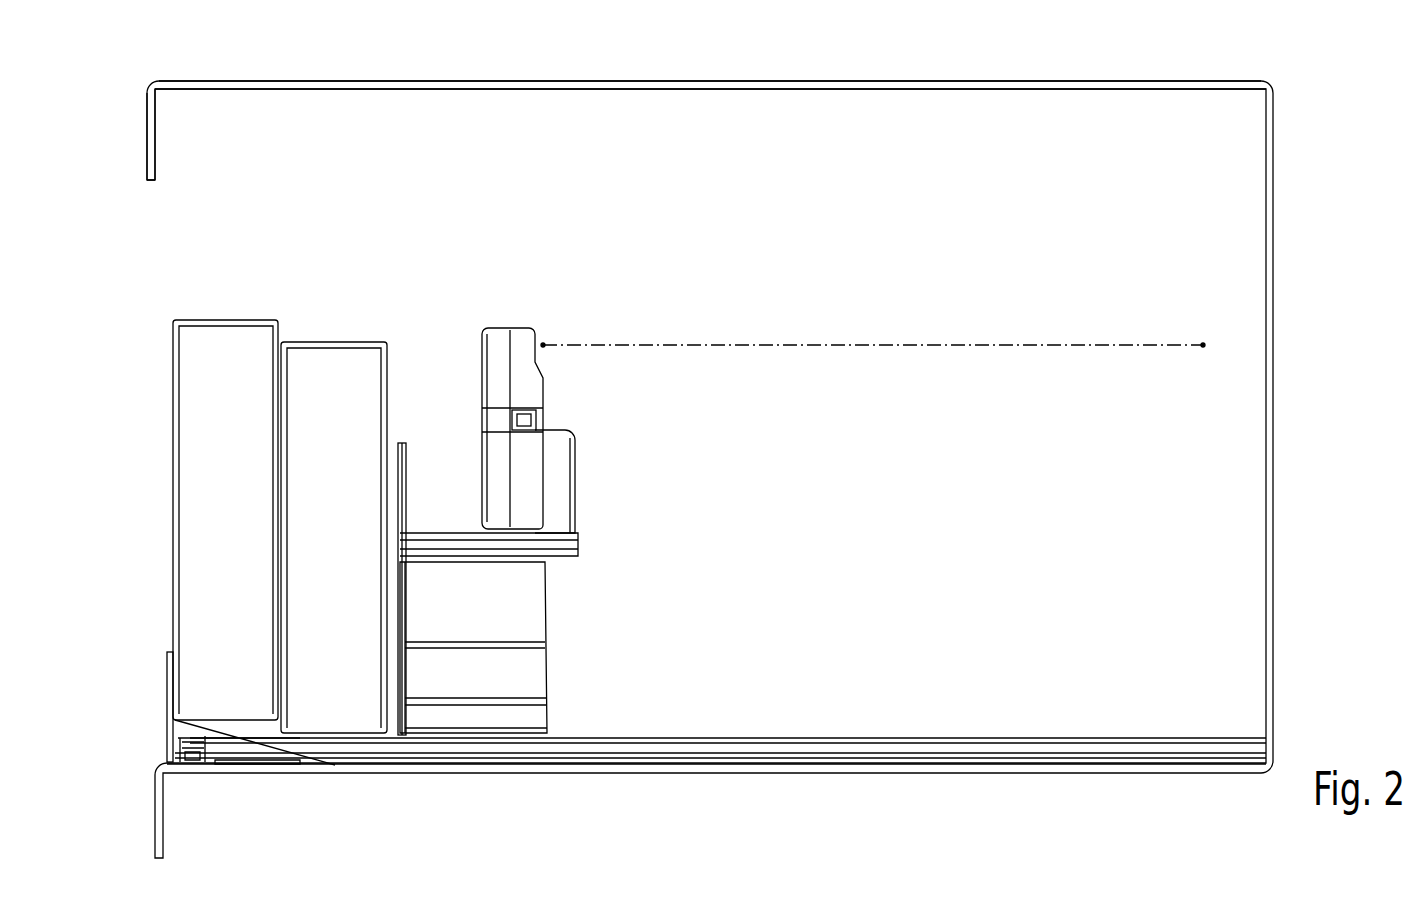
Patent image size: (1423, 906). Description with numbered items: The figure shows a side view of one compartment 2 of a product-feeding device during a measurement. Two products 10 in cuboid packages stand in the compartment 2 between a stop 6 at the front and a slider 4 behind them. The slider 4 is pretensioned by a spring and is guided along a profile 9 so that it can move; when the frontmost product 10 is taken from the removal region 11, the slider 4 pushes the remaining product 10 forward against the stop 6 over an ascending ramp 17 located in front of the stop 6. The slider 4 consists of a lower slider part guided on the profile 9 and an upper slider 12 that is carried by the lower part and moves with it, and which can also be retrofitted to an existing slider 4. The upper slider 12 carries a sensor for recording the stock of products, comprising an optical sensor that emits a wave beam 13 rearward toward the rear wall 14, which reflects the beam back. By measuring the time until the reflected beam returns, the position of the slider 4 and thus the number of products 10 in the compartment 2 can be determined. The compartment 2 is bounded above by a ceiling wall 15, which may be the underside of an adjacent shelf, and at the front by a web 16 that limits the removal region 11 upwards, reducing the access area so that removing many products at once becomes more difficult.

The compartment 2 is at (898, 130).
The slider 4 is at (455, 668).
The stop 6 is at (168, 672).
The profile 9 is at (673, 740).
The product 10 is at (336, 385).
The removal region 11 is at (140, 325).
The upper slider 12 is at (520, 345).
The wave beam 13 is at (848, 345).
The rear wall 14 is at (1268, 380).
The ceiling wall 15 is at (302, 88).
The web 16 is at (147, 137).
The ascending ramp 17 is at (259, 746).